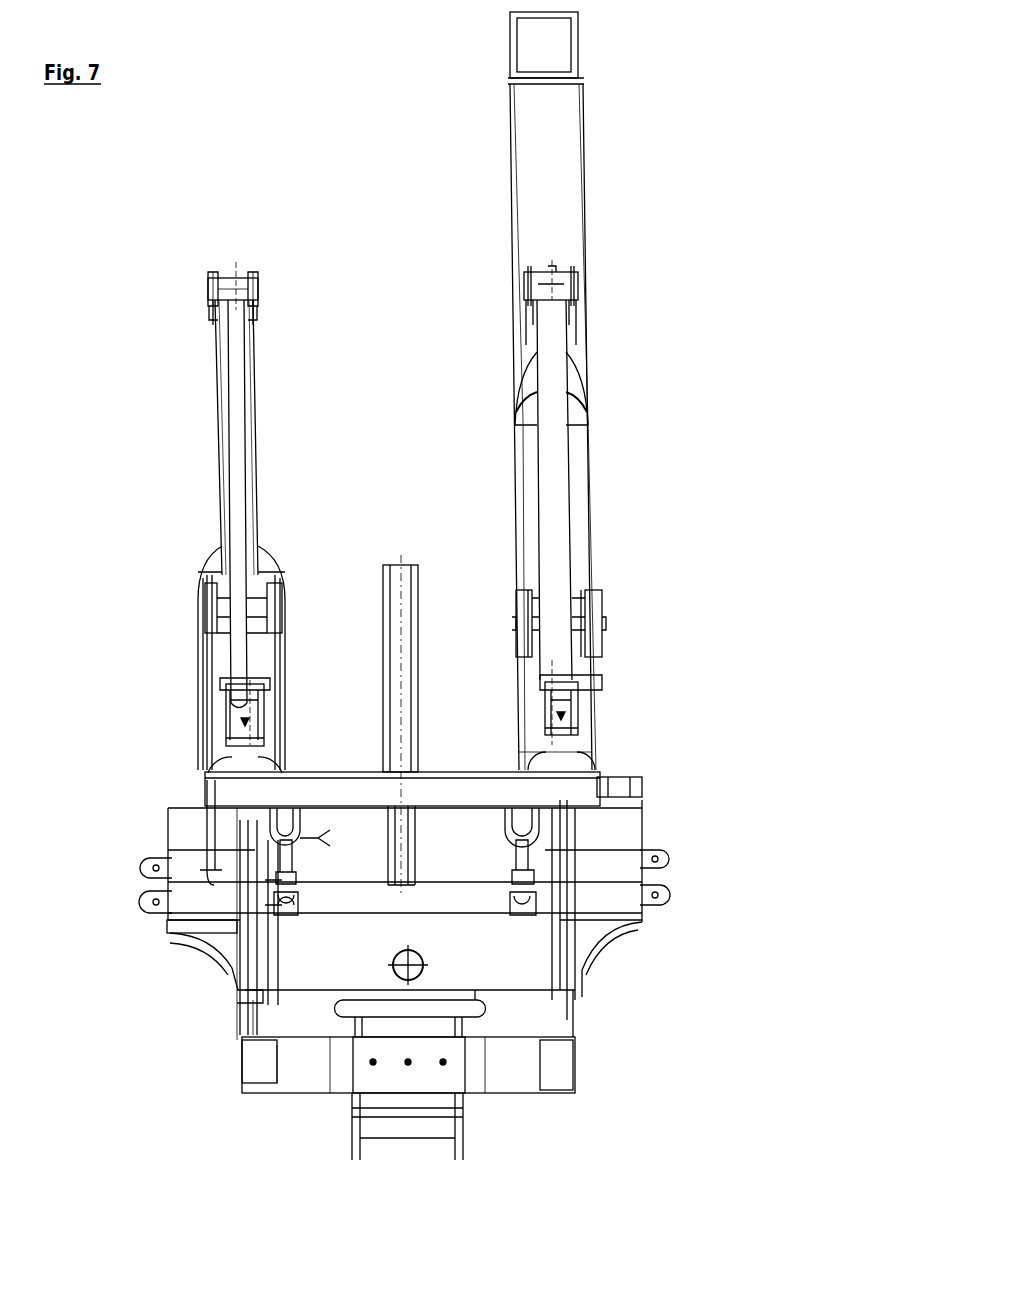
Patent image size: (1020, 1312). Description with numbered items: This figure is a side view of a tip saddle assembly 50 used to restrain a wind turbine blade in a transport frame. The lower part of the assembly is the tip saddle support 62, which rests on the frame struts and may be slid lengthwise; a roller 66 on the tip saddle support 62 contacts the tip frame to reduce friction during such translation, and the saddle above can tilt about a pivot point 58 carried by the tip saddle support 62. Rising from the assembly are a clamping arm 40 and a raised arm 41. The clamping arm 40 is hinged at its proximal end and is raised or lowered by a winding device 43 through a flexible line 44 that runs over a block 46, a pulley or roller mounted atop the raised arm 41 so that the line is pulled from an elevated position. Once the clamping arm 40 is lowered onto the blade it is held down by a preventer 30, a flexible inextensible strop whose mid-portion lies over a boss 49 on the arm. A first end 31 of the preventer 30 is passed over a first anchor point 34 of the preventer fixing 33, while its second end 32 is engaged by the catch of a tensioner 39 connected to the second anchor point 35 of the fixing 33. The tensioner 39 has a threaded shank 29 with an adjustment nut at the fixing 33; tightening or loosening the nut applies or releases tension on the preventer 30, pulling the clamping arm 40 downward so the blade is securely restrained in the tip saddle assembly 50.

The threaded shank 29 is at (285, 880).
The preventer 30 is at (207, 800).
The first end 31 is at (170, 865).
The second end 32 is at (283, 733).
The preventer fixing 33 is at (580, 882).
The first anchor point 34 is at (170, 913).
The second anchor point 35 is at (273, 900).
The tensioner 39 is at (336, 825).
The clamping arm 40 is at (532, 162).
The raised arm 41 is at (552, 343).
The winding device 43 is at (567, 714).
The flexible line 44 is at (222, 381).
The block 46 is at (212, 297).
The boss 49 is at (205, 572).
The tip saddle assembly 50 is at (793, 593).
The pivot point 58 is at (424, 965).
The tip saddle support 62 is at (395, 1123).
The roller 66 is at (555, 1073).